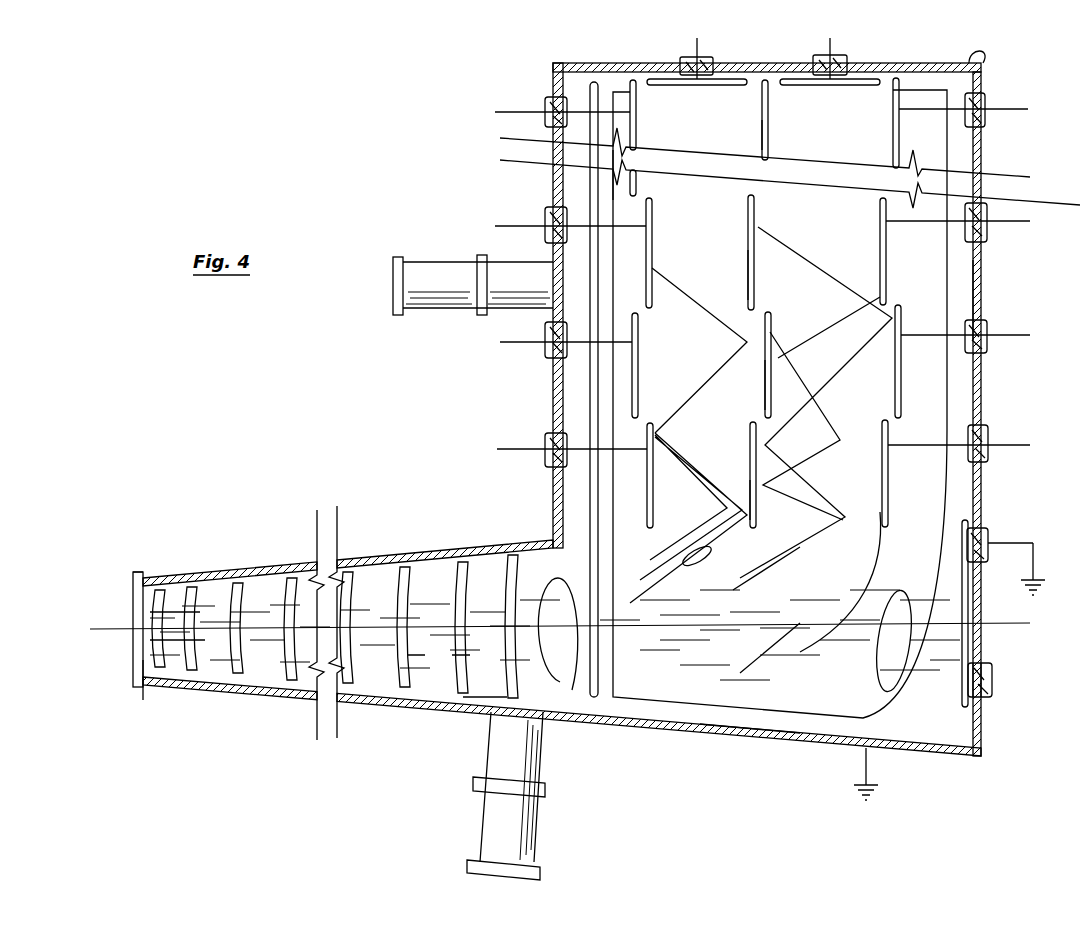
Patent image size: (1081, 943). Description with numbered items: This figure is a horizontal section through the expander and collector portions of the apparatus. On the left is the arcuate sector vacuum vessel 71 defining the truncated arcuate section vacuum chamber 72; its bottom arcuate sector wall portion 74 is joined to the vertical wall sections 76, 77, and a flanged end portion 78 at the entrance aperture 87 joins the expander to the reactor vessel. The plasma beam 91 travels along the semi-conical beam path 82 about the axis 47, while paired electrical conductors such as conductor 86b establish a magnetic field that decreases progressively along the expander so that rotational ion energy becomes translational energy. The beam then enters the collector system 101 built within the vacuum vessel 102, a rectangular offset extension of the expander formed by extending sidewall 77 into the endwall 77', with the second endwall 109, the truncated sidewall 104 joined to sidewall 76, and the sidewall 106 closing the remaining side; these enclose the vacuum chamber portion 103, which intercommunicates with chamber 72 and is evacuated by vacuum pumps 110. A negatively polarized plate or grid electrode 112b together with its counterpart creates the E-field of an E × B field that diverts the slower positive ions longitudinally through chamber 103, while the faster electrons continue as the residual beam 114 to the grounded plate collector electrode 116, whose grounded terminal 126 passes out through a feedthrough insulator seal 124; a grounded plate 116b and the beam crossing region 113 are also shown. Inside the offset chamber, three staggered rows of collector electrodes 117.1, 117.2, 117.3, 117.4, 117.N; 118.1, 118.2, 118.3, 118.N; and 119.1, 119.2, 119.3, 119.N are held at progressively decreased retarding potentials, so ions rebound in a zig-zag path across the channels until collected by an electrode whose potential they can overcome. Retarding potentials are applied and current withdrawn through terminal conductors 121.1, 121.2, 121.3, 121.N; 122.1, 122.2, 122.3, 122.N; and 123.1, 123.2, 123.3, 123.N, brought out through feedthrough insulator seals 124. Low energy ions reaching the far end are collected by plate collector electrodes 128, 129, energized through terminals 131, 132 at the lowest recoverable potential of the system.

The axis 47 is at (93, 640).
The arcuate sector vacuum vessel 71 is at (284, 704).
The truncated arcuate section vacuum chamber 72 is at (448, 583).
The bottom arcuate sector wall portion 74 is at (448, 671).
The vertical wall section 76 is at (400, 557).
The vertical wall section 77 is at (562, 716).
The endwall of the collector vessel 77' is at (750, 748).
The flanged end portion 78 is at (148, 575).
The semi-conical beam path 82 is at (227, 655).
The electrical conductor 86b is at (507, 697).
The entrance aperture 87 is at (133, 601).
The plasma beam 91 is at (572, 690).
The collector system 101 is at (990, 400).
The vacuum vessel 102 is at (972, 45).
The vacuum chamber portion 103 is at (712, 218).
The truncated sidewall 104 is at (553, 383).
The sidewall 106 is at (981, 298).
The second endwall 109 is at (603, 63).
The vacuum pump 110 is at (432, 272).
The plate or grid electrode 112b is at (711, 140).
The beam crossing loop 113 is at (690, 555).
The residual beam 114 is at (890, 685).
The plate collector electrode 116 is at (982, 702).
The grounded plate 116b is at (590, 193).
The collector electrode 117.N is at (636, 118).
The collector electrode 117.4 is at (636, 191).
The collector electrode 117.3 is at (655, 245).
The collector electrode 117.2 is at (638, 372).
The collector electrode 117.1 is at (653, 518).
The collector electrode 118.N is at (768, 145).
The collector electrode 118.3 is at (755, 293).
The collector electrode 118.2 is at (766, 394).
The collector electrode 118.1 is at (755, 478).
The collector electrode 119.N is at (893, 110).
The collector electrode 119.3 is at (880, 222).
The collector electrode 119.2 is at (895, 383).
The collector electrode 119.1 is at (882, 479).
The terminal conductor 121.N is at (524, 114).
The terminal conductor 121.3 is at (532, 227).
The terminal conductor 121.2 is at (534, 344).
The terminal conductor 121.1 is at (532, 453).
The terminal conductor 122.N is at (768, 112).
The terminal conductor 122.3 is at (755, 228).
The terminal conductor 122.2 is at (770, 342).
The terminal conductor 122.1 is at (750, 448).
The terminal conductor 123.N is at (1002, 110).
The terminal conductor 123.3 is at (1010, 221).
The terminal conductor 123.2 is at (1010, 335).
The terminal conductor 123.1 is at (1010, 445).
The feedthrough insulator seal 124 is at (988, 535).
The grounded terminal 126 is at (1033, 552).
The plate collector electrode 128 is at (725, 72).
The plate collector electrode 129 is at (862, 70).
The terminal 131 is at (697, 42).
The terminal 132 is at (830, 42).